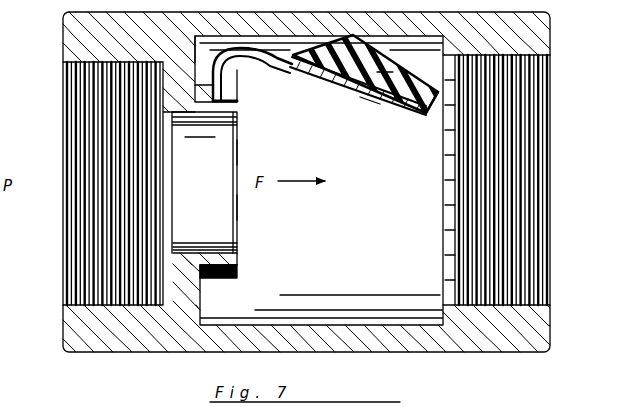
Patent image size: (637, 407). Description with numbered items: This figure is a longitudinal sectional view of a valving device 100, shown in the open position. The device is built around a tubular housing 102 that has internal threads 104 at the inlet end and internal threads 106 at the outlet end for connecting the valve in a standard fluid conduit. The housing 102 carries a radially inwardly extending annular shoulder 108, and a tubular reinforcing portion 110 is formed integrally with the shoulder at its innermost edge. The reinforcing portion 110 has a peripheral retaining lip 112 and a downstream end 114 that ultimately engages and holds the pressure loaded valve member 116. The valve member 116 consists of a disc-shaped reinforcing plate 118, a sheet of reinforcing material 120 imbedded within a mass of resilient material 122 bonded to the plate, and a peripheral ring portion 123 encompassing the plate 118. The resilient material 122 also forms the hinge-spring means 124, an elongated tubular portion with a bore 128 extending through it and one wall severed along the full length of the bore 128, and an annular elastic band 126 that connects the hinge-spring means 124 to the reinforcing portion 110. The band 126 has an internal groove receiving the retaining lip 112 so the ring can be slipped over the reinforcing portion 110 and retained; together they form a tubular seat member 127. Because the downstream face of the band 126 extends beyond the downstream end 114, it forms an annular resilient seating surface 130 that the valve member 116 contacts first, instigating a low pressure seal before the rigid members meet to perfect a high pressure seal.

The valving device 100 is at (68, 345).
The tubular housing 102 is at (240, 340).
The internal threads 104 is at (83, 302).
The internal threads 106 is at (525, 307).
The annular shoulder 108 is at (188, 305).
The tubular reinforcing portion 110 is at (222, 247).
The peripheral retaining lip 112 is at (228, 279).
The downstream end 114 is at (228, 162).
The valve member 116 is at (372, 120).
The reinforcing plate 118 is at (365, 100).
The sheet of reinforcing material 120 is at (280, 62).
The resilient material 122 is at (379, 71).
The peripheral ring portion 123 is at (428, 112).
The hinge-spring means 124 is at (195, 52).
The annular elastic band 126 is at (248, 270).
The tubular seat member 127 is at (240, 152).
The bore 128 is at (232, 78).
The annular resilient seating surface 130 is at (238, 208).